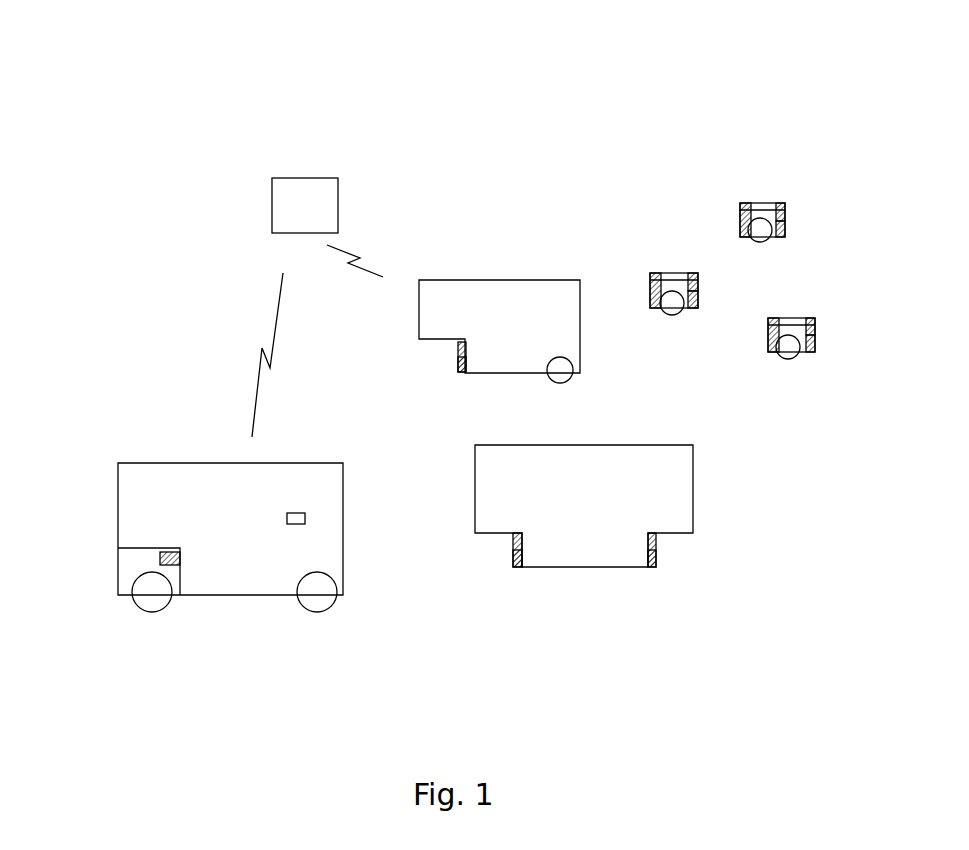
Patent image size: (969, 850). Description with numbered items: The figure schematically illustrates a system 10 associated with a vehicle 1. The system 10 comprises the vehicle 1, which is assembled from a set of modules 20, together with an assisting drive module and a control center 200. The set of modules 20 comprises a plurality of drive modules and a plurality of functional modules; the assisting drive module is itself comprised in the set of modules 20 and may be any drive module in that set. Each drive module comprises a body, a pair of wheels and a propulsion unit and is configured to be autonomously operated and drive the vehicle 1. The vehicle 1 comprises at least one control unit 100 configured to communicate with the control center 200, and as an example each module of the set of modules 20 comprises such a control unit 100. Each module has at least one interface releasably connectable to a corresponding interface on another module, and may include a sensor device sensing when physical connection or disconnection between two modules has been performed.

The system 10 is at (329, 105).
The control center 200 is at (305, 205).
The vehicle 1 is at (118, 540).
The control unit 100 is at (168, 546).
The set of modules 20 is at (760, 436).